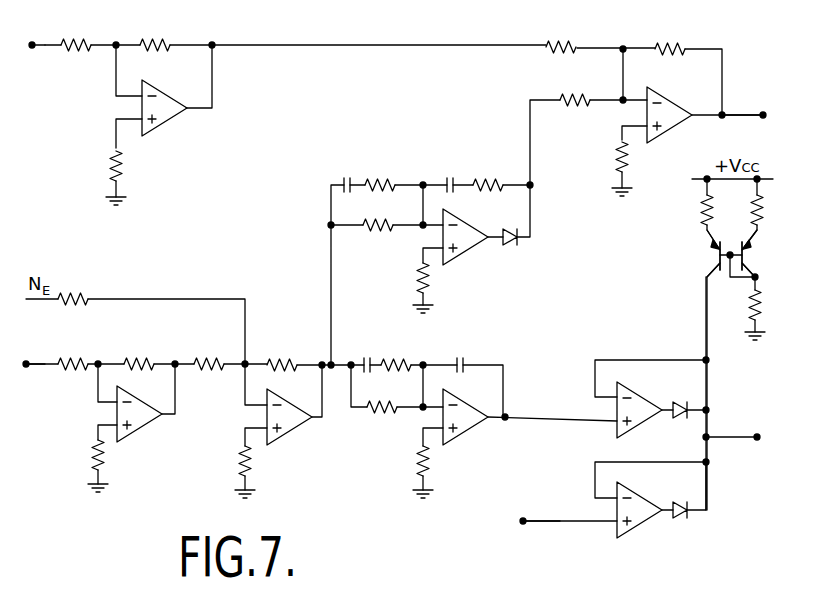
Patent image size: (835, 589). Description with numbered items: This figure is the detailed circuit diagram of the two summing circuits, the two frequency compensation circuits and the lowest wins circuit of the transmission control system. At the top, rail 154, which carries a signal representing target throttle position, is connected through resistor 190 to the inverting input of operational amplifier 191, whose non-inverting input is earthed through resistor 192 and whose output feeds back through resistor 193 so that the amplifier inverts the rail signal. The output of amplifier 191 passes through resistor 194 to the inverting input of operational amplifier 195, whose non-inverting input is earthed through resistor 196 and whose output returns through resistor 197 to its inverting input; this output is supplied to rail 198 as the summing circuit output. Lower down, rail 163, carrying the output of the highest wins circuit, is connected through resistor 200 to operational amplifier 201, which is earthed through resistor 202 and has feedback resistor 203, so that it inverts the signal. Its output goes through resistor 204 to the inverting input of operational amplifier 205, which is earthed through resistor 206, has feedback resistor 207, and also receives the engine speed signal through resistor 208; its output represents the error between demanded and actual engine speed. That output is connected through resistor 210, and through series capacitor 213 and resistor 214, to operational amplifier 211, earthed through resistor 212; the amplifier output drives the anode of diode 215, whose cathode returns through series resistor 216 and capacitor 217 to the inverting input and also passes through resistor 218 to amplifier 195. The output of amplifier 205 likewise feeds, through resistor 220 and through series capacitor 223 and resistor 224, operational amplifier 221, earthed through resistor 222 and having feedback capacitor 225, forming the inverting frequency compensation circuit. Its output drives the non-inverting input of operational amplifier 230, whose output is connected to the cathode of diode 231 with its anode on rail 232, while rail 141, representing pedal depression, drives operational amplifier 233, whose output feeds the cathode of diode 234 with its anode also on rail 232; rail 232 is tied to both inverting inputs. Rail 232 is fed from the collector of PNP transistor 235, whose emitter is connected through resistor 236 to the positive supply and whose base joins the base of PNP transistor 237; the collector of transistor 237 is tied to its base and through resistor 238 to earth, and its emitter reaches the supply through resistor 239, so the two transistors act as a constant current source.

The rail 154 is at (44, 42).
The resistor 190 is at (82, 53).
The resistor 193 is at (153, 52).
The operational amplifier 191 is at (163, 115).
The resistor 192 is at (108, 165).
The resistor 194 is at (548, 45).
The resistor 197 is at (664, 55).
The rail 198 is at (745, 110).
The resistor 218 is at (573, 101).
The operational amplifier 195 is at (673, 120).
The resistor 196 is at (618, 160).
The resistor 239 is at (750, 214).
The resistor 236 is at (700, 211).
The transistor 235 is at (715, 257).
The PNP transistor 237 is at (748, 258).
The resistor 238 is at (753, 303).
The capacitor 213 is at (344, 177).
The resistor 214 is at (381, 176).
The capacitor 217 is at (450, 177).
The resistor 216 is at (488, 176).
The resistor 210 is at (383, 232).
The operational amplifier 211 is at (468, 243).
The resistor 212 is at (415, 277).
The diode 215 is at (518, 243).
The resistor 208 is at (78, 293).
The rail 163 is at (43, 362).
The resistor 200 is at (76, 371).
The resistor 203 is at (142, 362).
The resistor 204 is at (212, 368).
The resistor 207 is at (282, 362).
The operational amplifier 201 is at (140, 420).
The resistor 202 is at (94, 457).
The operational amplifier 205 is at (290, 430).
The resistor 206 is at (238, 462).
The capacitor 223 is at (366, 358).
The resistor 224 is at (400, 360).
The capacitor 225 is at (466, 371).
The resistor 220 is at (382, 410).
The operational amplifier 221 is at (478, 430).
The resistor 222 is at (415, 458).
The diode 231 is at (676, 400).
The operational amplifier 230 is at (638, 426).
The rail 232 is at (707, 379).
The operational amplifier 233 is at (642, 526).
The diode 234 is at (695, 514).
The rail 141 is at (549, 526).